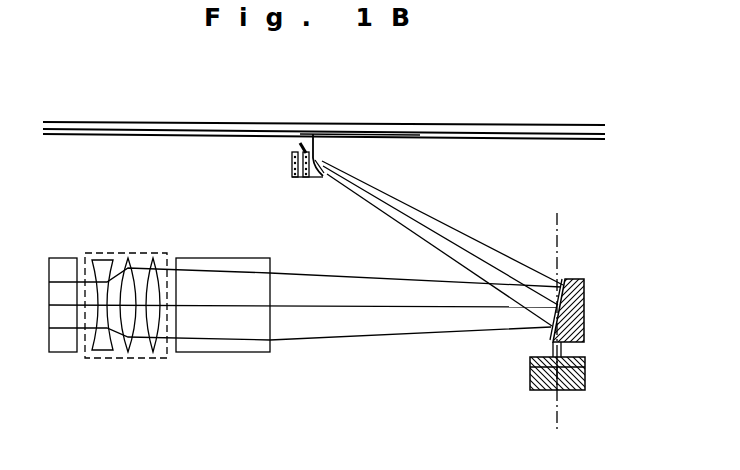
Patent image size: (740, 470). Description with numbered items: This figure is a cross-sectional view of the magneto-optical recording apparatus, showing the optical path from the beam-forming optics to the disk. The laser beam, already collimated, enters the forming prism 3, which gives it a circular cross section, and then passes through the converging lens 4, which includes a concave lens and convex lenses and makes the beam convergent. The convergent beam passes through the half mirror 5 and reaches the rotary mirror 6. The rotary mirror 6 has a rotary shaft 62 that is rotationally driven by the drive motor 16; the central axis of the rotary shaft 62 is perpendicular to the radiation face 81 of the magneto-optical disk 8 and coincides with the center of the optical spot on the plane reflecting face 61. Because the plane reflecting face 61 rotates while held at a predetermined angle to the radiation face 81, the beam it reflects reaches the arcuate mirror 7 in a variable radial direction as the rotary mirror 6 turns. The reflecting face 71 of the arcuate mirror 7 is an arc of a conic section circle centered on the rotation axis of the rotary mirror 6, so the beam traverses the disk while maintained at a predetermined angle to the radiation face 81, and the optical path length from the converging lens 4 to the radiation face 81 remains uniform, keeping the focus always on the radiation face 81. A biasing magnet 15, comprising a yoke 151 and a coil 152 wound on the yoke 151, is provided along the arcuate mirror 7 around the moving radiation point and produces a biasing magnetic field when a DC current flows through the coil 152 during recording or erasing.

The forming prism 3 is at (63, 350).
The converging lens 4 is at (128, 353).
The half mirror 5 is at (217, 347).
The rotary mirror 6 is at (583, 288).
The plane reflecting face 61 is at (561, 278).
The rotary shaft 62 is at (563, 347).
The drive motor 16 is at (585, 380).
The arcuate mirror 7 is at (323, 180).
The reflecting face of the arcuate mirror 71 is at (332, 172).
The magneto-optical disk 8 is at (435, 128).
The radiation face 81 is at (472, 137).
The biasing magnet 15 is at (298, 142).
The yoke 151 is at (292, 152).
The coil 152 is at (292, 177).